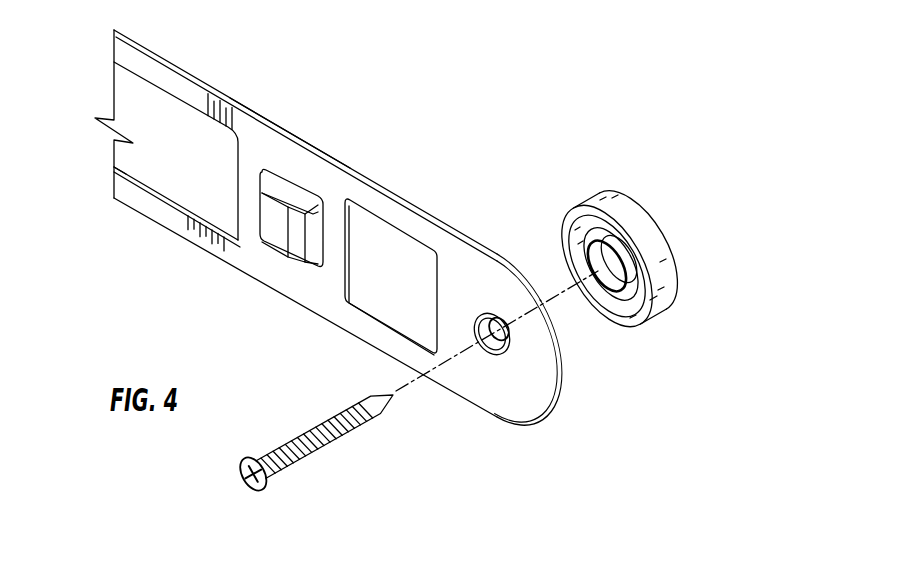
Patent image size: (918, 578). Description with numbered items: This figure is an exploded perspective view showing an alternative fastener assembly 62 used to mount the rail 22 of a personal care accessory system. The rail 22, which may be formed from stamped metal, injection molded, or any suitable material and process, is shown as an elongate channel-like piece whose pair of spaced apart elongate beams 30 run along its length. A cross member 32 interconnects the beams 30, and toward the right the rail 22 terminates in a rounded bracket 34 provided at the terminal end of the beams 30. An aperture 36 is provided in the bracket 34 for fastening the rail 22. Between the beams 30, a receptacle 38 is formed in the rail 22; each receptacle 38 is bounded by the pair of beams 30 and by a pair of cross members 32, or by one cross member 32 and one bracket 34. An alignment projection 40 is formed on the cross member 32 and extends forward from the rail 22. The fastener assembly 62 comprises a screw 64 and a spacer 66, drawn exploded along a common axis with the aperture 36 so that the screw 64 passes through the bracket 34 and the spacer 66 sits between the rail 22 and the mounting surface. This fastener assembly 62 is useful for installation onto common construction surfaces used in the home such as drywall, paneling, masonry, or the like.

The rail 22 is at (307, 152).
The elongate beam 30 is at (167, 215).
The cross member 32 is at (340, 238).
The bracket 34 is at (538, 363).
The aperture 36 is at (497, 348).
The receptacle 38 is at (127, 176).
The alignment projection 40 is at (308, 232).
The fastener assembly 62 is at (650, 221).
The screw 64 is at (310, 445).
The spacer 66 is at (668, 260).